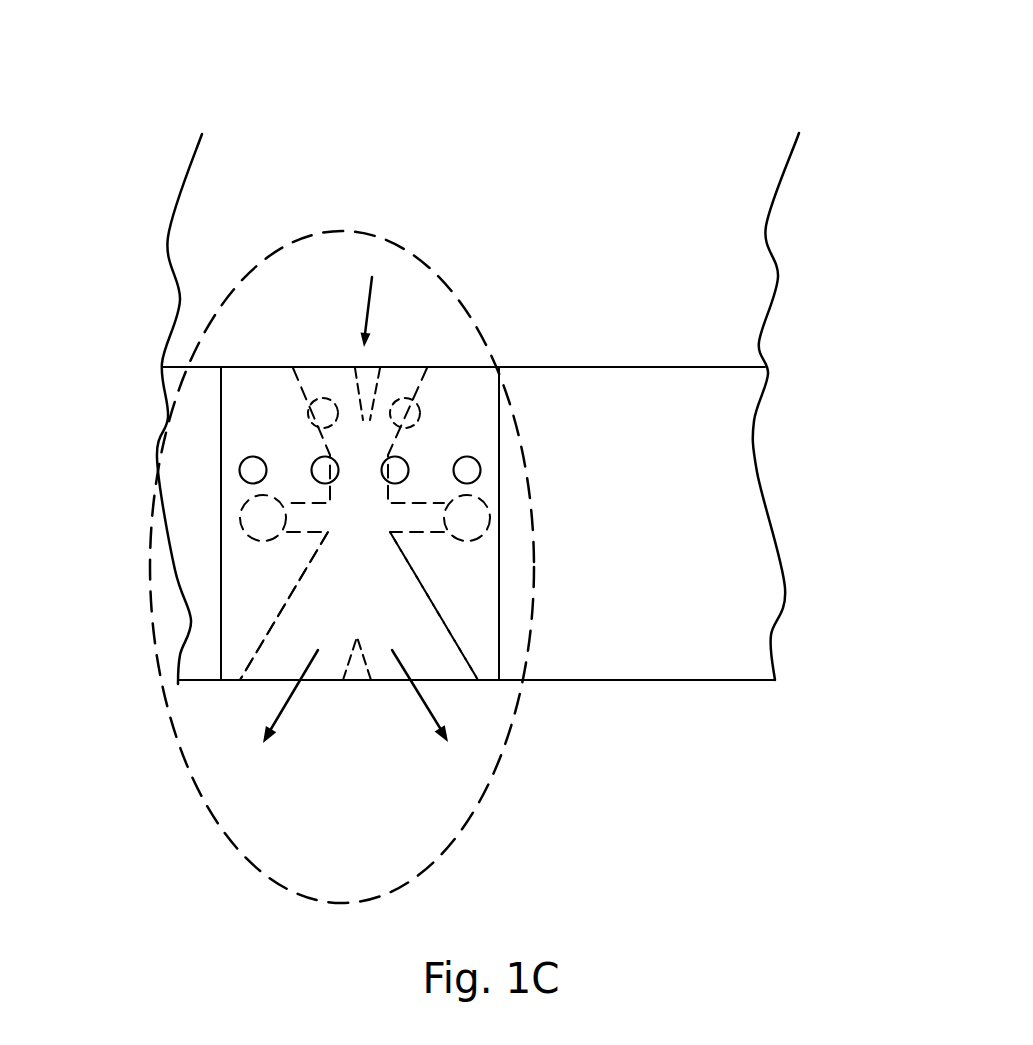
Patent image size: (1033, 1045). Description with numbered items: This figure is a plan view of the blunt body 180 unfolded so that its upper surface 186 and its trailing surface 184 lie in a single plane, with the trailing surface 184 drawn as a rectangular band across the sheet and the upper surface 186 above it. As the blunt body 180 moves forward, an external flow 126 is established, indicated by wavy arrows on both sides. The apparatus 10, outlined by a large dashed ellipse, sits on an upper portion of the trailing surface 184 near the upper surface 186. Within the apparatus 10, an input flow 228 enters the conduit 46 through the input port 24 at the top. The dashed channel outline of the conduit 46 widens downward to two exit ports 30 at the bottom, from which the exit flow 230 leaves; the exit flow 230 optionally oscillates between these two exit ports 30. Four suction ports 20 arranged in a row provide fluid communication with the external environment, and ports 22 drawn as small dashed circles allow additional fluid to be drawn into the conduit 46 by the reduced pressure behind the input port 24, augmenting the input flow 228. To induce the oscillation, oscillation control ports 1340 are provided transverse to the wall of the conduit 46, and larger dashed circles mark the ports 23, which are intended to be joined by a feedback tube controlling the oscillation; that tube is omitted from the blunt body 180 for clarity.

The blunt body 180 is at (203, 45).
The external flow 126 is at (230, 232).
The apparatus 10 is at (440, 273).
The input flow 228 is at (372, 296).
The upper surface 186 is at (701, 281).
The trailing surface 184 is at (710, 547).
The input port 24 is at (362, 367).
The suction port 20 is at (400, 460).
The port 22 is at (310, 420).
The ports 23 is at (272, 525).
The exit port 30 is at (418, 633).
The conduit 46 is at (382, 590).
The oscillation control ports 1340 is at (310, 533).
The exit flow 230 is at (293, 698).